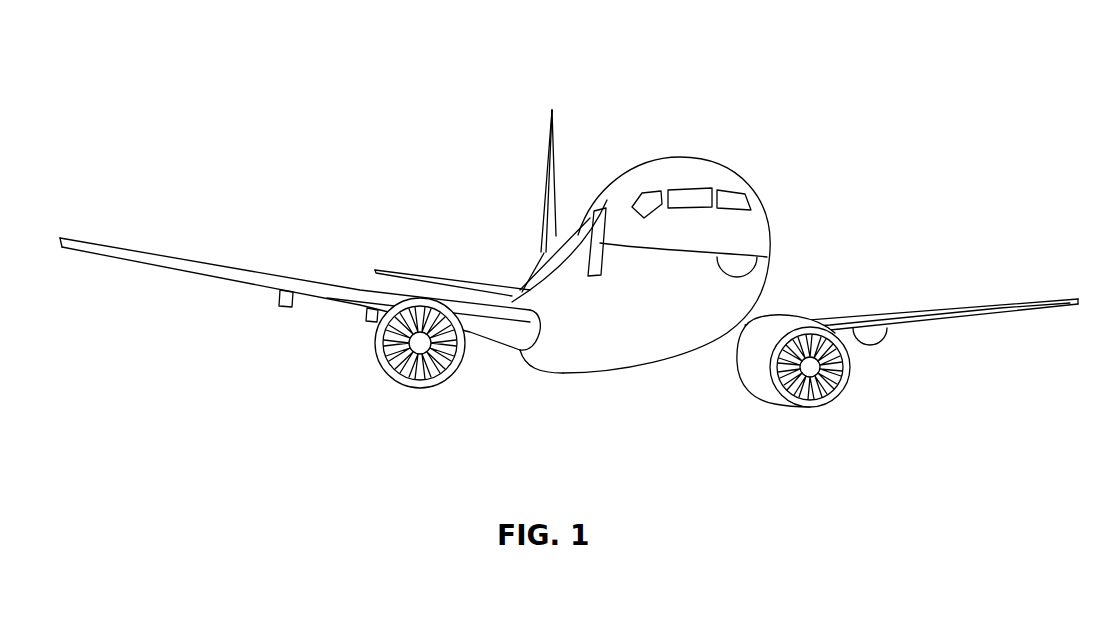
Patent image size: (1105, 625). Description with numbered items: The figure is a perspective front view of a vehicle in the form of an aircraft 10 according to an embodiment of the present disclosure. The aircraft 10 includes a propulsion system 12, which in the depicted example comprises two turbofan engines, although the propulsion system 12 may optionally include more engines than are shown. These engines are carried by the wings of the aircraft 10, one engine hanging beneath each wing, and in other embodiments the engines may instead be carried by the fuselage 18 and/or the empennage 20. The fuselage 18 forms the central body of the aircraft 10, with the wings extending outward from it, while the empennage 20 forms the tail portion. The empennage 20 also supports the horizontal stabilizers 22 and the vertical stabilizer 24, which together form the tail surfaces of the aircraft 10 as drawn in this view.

The aircraft 10 is at (319, 64).
The propulsion system 12 is at (890, 397).
The fuselage 18 is at (770, 223).
The empennage 20 is at (545, 253).
The horizontal stabilizers 22 is at (413, 268).
The vertical stabilizer 24 is at (548, 150).